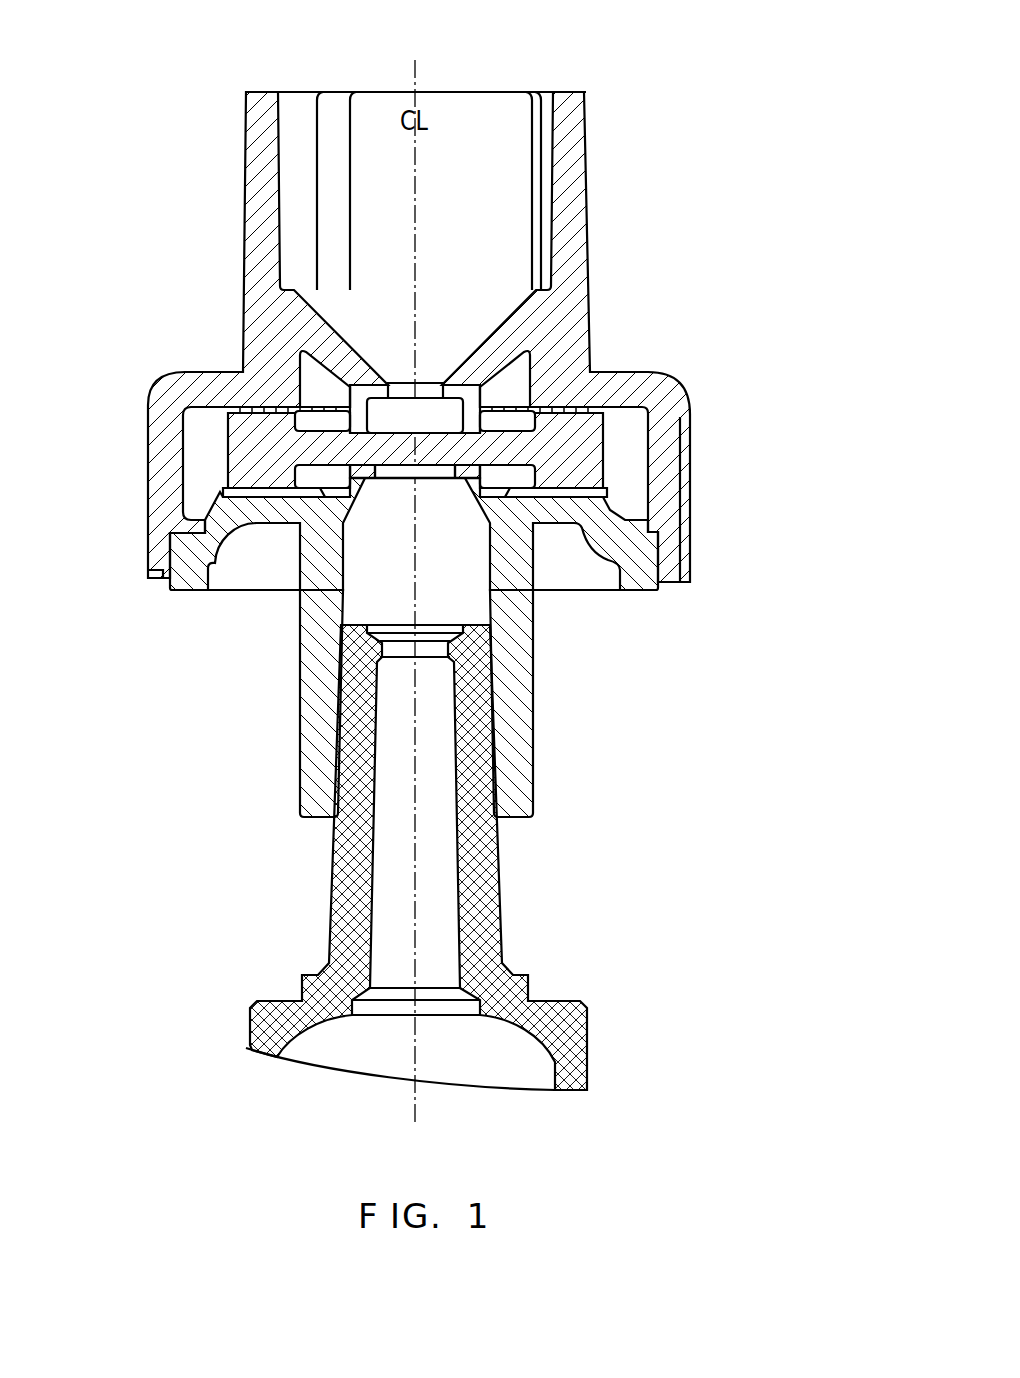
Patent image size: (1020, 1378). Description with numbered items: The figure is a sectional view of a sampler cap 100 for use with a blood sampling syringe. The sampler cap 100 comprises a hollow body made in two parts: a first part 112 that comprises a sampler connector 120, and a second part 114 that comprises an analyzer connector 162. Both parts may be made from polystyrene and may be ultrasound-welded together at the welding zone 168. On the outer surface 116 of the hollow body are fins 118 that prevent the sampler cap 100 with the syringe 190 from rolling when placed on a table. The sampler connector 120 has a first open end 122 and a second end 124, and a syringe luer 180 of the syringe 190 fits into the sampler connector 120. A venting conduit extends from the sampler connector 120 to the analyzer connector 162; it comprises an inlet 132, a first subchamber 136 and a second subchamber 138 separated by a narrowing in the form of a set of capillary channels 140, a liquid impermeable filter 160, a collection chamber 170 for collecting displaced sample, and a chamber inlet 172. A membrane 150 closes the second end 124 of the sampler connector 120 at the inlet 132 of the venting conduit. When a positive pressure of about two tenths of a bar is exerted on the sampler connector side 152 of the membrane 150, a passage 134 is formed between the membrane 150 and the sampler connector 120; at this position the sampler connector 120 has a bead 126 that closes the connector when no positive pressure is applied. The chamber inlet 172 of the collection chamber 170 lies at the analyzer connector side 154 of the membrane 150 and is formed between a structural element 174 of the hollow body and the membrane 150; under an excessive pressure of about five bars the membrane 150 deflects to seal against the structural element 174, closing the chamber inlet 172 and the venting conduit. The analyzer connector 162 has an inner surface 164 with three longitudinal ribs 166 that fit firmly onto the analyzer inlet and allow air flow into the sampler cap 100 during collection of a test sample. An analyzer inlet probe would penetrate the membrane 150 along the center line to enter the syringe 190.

The sampler cap 100 is at (622, 118).
The first part 112 is at (518, 707).
The second part 114 is at (570, 257).
The outer surface 116 is at (148, 405).
The fins 118 is at (690, 565).
The sampler connector 120 is at (368, 600).
The first open end 122 is at (498, 816).
The second end 124 is at (391, 480).
The bead 126 is at (458, 473).
The inlet 132 is at (432, 472).
The passage 134 is at (297, 552).
The first subchamber 136 is at (576, 556).
The second subchamber 138 is at (635, 485).
The capillary channels 140 is at (585, 495).
The membrane 150 is at (565, 445).
The sampler connector side 152 is at (398, 470).
The analyzer connector side 154 is at (392, 362).
The liquid impermeable filter 160 is at (573, 402).
The analyzer connector 162 is at (467, 205).
The inner surface 164 is at (278, 155).
The longitudinal ribs 166 is at (333, 165).
The welding zone 168 is at (148, 573).
The collection chamber 170 is at (500, 368).
The chamber inlet 172 is at (420, 395).
The structural element 174 is at (473, 405).
The syringe luer 180 is at (488, 918).
The syringe 190 is at (580, 1062).